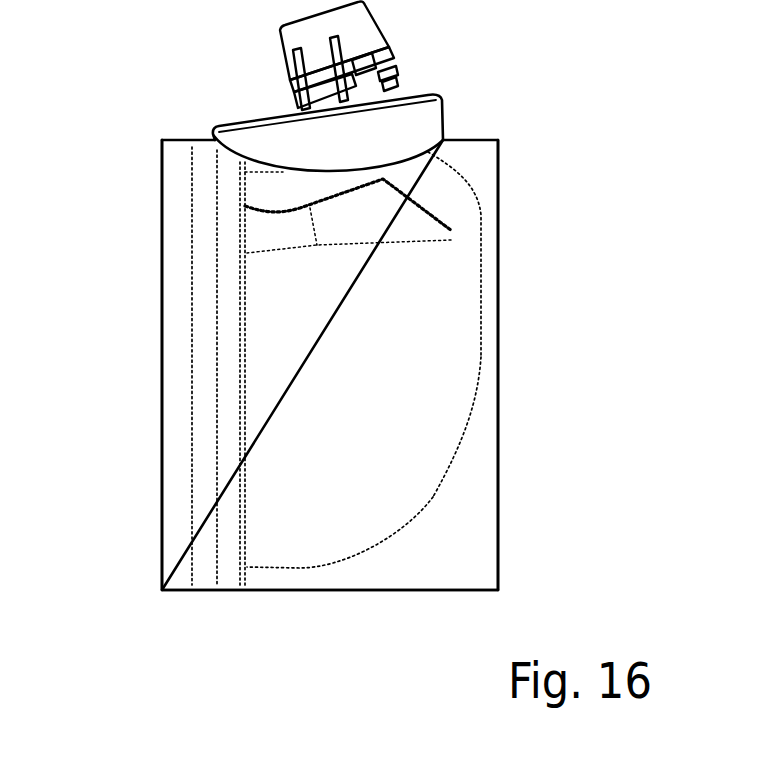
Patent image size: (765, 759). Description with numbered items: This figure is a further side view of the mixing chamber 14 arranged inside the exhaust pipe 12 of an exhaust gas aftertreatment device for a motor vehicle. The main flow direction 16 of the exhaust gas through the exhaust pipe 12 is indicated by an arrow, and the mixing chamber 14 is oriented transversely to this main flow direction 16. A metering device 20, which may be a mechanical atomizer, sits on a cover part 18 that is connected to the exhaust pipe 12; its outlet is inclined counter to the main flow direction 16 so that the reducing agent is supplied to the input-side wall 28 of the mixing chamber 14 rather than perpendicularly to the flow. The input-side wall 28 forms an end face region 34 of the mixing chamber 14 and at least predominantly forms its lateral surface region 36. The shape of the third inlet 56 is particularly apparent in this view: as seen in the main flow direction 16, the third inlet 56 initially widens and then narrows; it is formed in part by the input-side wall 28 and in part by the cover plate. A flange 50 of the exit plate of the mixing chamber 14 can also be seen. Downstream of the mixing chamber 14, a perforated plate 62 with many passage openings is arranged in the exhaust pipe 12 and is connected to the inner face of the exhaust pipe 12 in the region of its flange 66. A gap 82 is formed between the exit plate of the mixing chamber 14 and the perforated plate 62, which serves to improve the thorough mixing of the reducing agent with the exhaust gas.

The exhaust pipe 12 is at (490, 562).
The mixing chamber 14 is at (496, 221).
The main flow direction 16 is at (538, 357).
The cover part 18 is at (425, 115).
The metering device 20 is at (257, 71).
The input-side wall 28 is at (478, 412).
The end face region 34 is at (482, 322).
The lateral surface region 36 is at (413, 517).
The flange 50 is at (245, 573).
The third inlet 56 is at (407, 207).
The perforated plate 62 is at (172, 417).
The flange 66 is at (202, 533).
The gap 82 is at (223, 260).